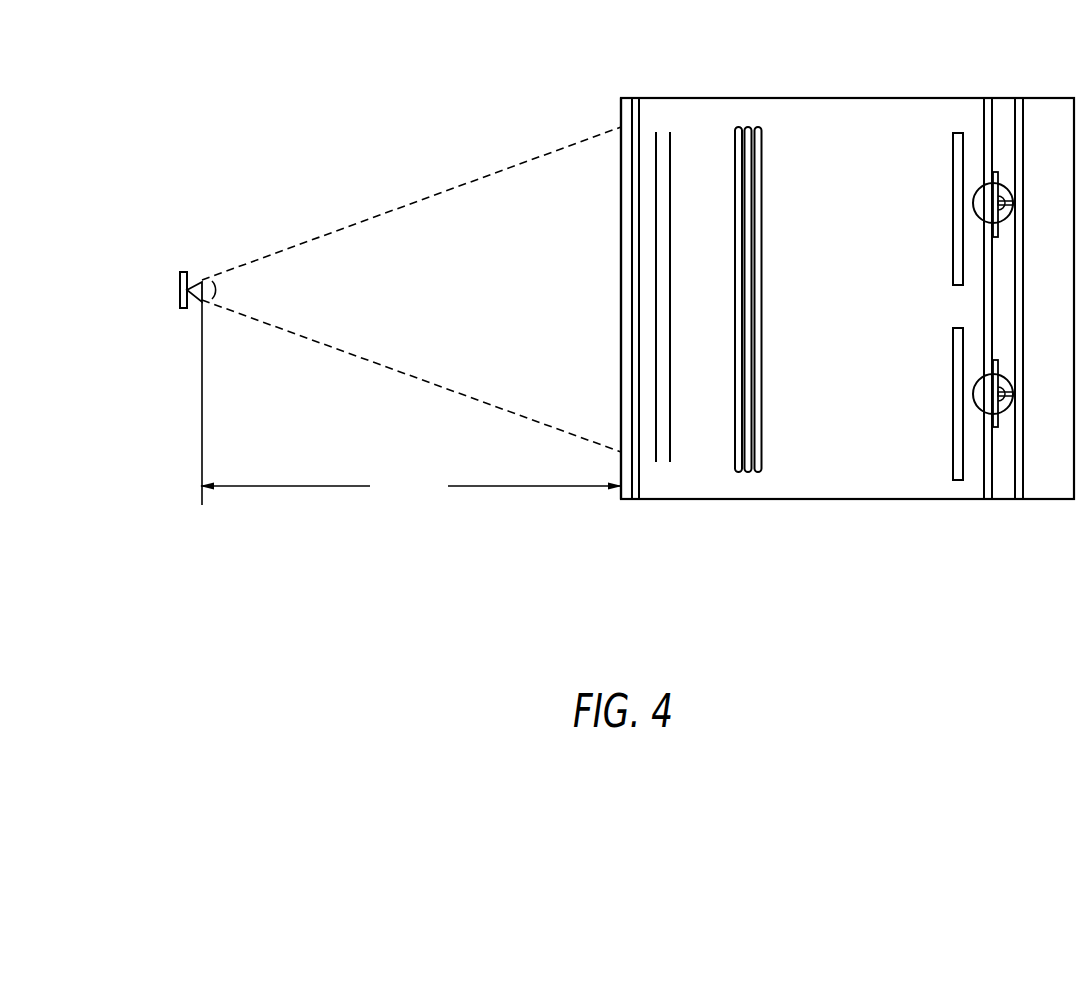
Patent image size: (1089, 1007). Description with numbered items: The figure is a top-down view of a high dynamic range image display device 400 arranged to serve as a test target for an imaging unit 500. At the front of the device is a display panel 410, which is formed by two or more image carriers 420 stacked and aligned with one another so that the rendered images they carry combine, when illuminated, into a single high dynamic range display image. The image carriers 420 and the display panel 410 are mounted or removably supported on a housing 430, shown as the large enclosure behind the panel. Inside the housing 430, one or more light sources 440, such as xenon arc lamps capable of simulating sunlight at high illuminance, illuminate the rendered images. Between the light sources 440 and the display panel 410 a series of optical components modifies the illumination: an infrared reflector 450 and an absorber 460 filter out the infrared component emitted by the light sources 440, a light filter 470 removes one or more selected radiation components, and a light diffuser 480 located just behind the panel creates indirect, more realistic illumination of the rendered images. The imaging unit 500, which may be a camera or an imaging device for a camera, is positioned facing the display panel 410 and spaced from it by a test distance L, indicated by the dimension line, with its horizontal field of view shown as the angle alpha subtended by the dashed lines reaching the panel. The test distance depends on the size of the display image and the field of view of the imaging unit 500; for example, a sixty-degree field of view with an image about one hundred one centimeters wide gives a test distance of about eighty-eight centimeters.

The display device 400 is at (357, 130).
The display panel 410 is at (619, 111).
The image carriers 420 is at (627, 99).
The housing 430 is at (830, 97).
The light sources 440 is at (1000, 172).
The infrared reflector 450 is at (953, 206).
The absorber 460 is at (773, 322).
The light filter 470 is at (670, 333).
The light diffuser 480 is at (655, 432).
The imaging unit 500 is at (165, 297).